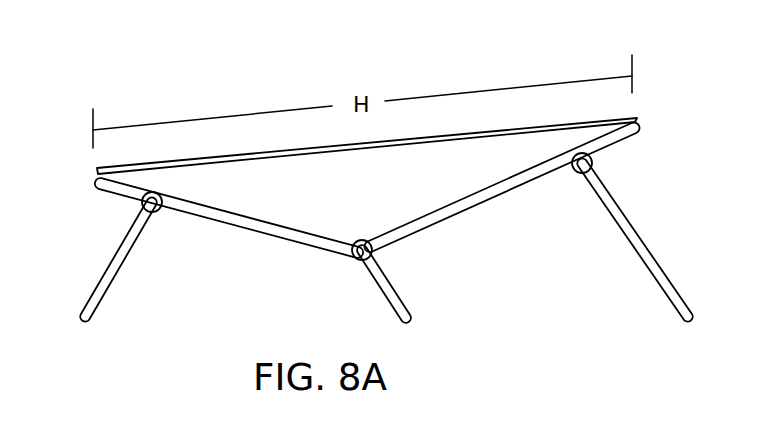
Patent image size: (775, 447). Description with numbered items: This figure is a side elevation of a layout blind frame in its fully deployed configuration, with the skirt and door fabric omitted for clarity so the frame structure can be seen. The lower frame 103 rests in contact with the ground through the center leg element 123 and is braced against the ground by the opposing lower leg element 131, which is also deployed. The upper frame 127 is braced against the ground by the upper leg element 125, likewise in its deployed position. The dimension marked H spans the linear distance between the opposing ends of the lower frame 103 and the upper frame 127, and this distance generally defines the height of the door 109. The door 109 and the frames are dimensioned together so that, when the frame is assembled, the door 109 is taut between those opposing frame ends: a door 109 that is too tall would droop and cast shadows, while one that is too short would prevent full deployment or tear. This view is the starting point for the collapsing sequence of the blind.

The door 109 is at (386, 143).
The lower frame 103 is at (297, 244).
The upper frame 127 is at (453, 212).
The lower leg element 131 is at (105, 289).
The center leg element 123 is at (395, 308).
The upper leg element 125 is at (682, 307).